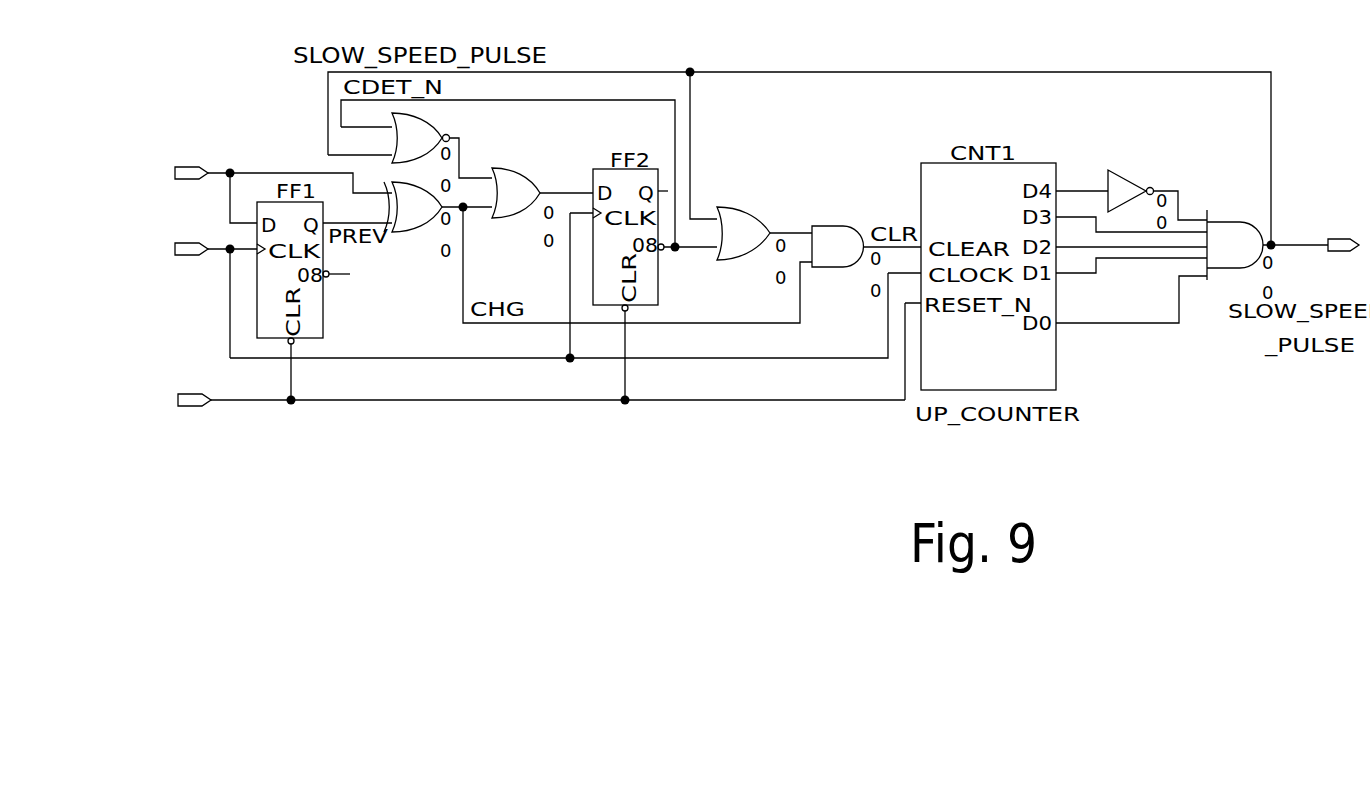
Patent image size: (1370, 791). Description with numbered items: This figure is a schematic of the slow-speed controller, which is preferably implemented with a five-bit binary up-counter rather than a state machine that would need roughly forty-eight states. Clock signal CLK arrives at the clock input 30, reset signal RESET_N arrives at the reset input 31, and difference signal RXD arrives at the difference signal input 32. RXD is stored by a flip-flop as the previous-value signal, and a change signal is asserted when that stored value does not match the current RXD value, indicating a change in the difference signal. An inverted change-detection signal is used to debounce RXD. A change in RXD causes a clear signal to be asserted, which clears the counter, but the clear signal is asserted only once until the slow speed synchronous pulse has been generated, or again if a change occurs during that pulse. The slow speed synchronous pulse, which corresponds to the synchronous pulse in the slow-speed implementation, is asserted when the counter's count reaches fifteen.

The clock input 30 is at (213, 251).
The reset input 31 is at (228, 401).
The difference signal input 32 is at (218, 172).